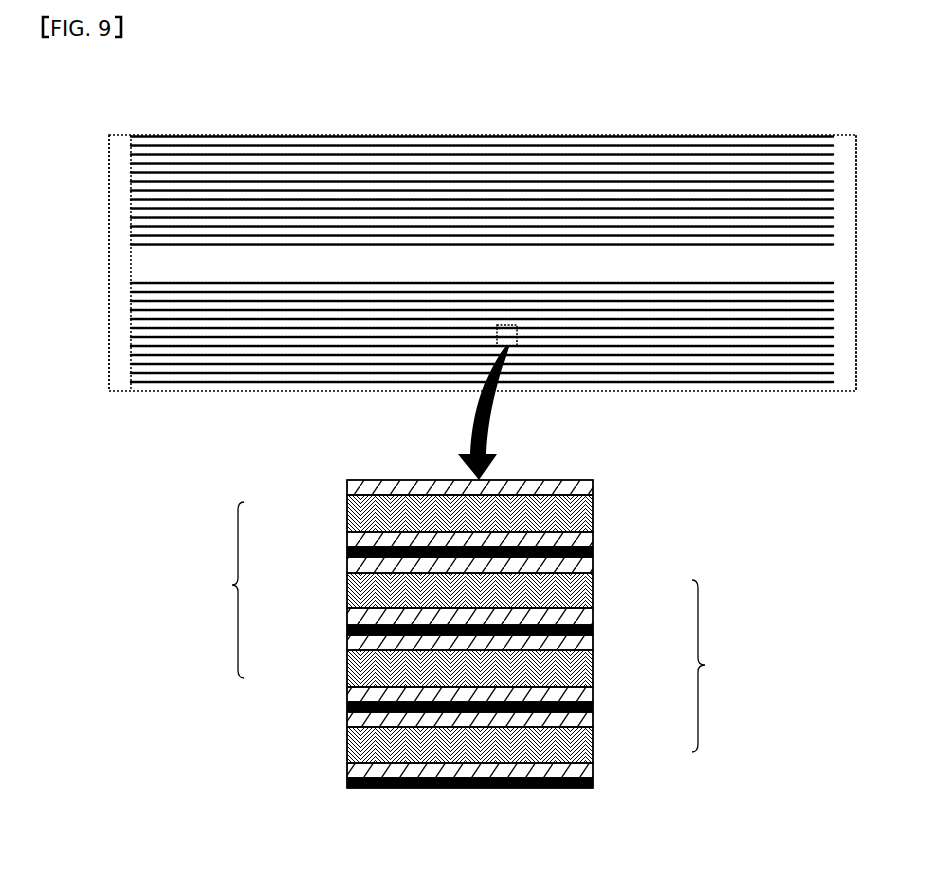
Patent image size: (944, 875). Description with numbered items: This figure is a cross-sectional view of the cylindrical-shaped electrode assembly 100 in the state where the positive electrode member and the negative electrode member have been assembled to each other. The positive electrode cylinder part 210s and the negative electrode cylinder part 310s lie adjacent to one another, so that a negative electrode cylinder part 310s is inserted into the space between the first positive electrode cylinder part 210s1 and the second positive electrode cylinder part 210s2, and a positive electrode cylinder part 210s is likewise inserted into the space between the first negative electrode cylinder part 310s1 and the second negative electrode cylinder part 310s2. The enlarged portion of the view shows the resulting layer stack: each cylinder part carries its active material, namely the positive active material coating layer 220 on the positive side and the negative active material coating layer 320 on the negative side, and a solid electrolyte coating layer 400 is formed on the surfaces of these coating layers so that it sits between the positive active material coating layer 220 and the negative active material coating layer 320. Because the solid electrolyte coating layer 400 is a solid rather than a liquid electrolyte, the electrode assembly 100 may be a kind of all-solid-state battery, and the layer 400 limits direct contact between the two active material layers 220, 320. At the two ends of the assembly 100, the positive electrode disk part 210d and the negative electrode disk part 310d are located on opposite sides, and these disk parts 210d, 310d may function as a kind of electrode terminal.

The electrode assembly 100 is at (448, 126).
The positive electrode disk part 210d is at (120, 384).
The negative electrode disk part 310d is at (847, 383).
The positive active material coating layer 220 is at (405, 487).
The negative active material coating layer 320 is at (578, 567).
The solid electrolyte coating layer 400 is at (540, 552).
The positive electrode cylinder part 210s is at (213, 590).
The first positive electrode cylinder part 210s1 is at (360, 516).
The second positive electrode cylinder part 210s2 is at (360, 670).
The negative electrode cylinder part 310s is at (722, 666).
The first negative electrode cylinder part 310s1 is at (578, 596).
The second negative electrode cylinder part 310s2 is at (578, 744).